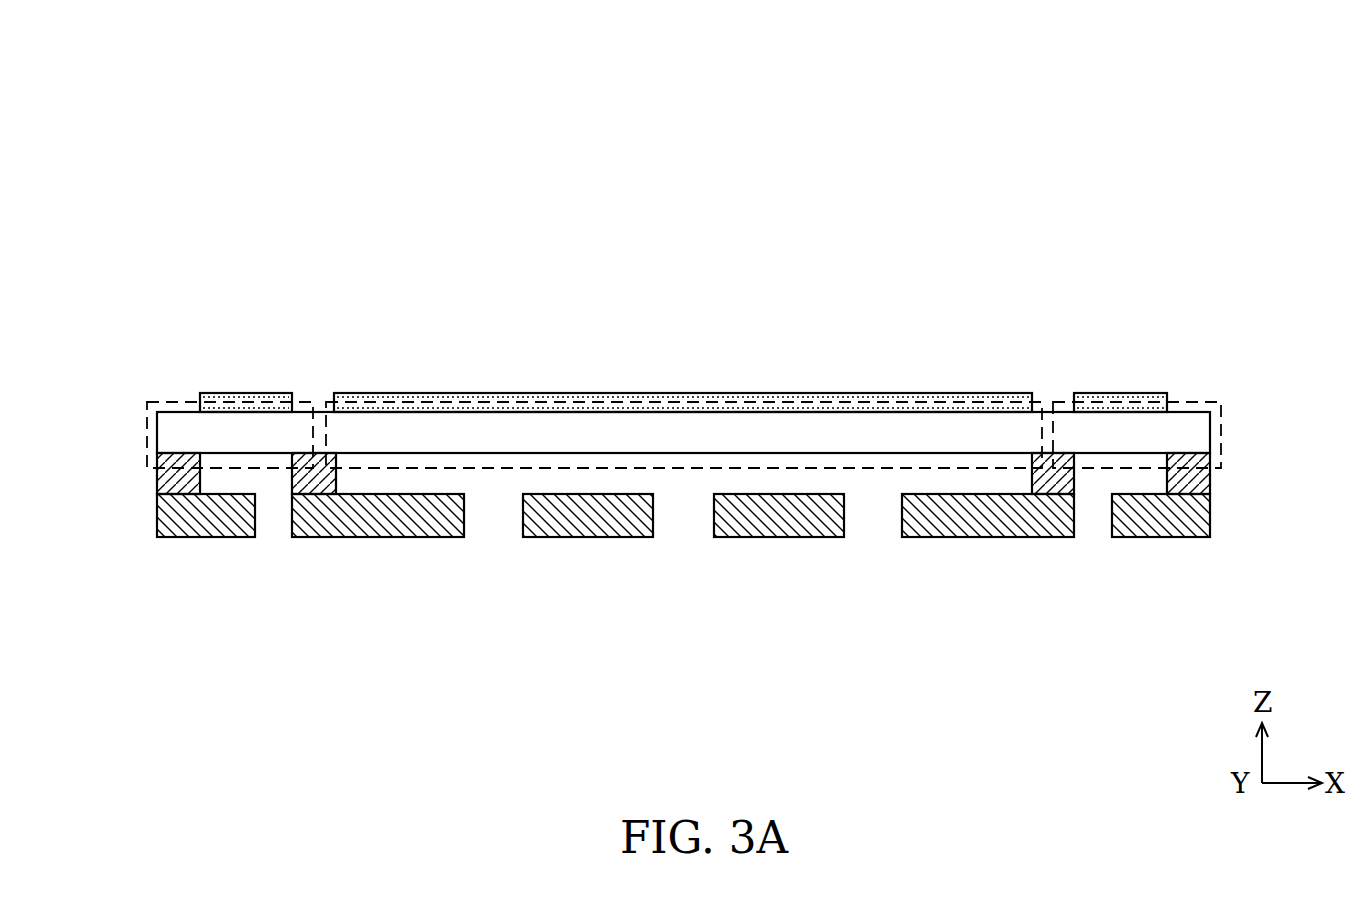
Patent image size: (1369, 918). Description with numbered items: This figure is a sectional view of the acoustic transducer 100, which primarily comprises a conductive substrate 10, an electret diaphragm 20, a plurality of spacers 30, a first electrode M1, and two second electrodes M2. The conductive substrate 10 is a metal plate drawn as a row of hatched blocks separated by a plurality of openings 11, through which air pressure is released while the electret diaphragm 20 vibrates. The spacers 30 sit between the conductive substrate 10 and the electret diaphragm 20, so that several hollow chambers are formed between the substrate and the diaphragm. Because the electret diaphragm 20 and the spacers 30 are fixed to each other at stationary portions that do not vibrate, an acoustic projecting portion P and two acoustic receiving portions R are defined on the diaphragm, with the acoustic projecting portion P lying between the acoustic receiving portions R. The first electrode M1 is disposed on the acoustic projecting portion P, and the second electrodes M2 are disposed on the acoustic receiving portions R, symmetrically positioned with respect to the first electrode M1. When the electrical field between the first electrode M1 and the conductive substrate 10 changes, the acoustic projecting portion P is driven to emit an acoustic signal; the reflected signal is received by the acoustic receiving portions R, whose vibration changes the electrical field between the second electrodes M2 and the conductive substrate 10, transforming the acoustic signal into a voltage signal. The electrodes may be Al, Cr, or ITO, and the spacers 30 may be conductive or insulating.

The acoustic transducer 100 is at (107, 105).
The conductive substrate 10 is at (1212, 512).
The openings 11 is at (270, 522).
The electret diaphragm 20 is at (1212, 430).
The spacers 30 is at (157, 479).
The first electrode M1 is at (684, 393).
The second electrodes M2 is at (247, 393).
The acoustic projecting portion P is at (573, 402).
The acoustic receiving portions R is at (176, 402).